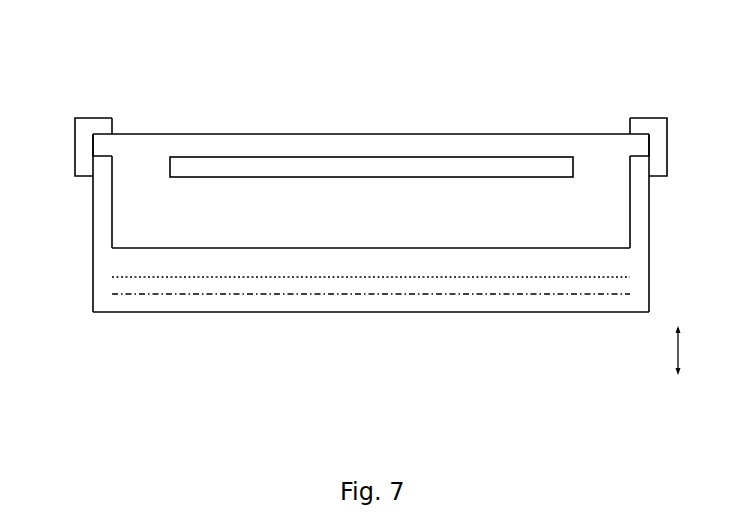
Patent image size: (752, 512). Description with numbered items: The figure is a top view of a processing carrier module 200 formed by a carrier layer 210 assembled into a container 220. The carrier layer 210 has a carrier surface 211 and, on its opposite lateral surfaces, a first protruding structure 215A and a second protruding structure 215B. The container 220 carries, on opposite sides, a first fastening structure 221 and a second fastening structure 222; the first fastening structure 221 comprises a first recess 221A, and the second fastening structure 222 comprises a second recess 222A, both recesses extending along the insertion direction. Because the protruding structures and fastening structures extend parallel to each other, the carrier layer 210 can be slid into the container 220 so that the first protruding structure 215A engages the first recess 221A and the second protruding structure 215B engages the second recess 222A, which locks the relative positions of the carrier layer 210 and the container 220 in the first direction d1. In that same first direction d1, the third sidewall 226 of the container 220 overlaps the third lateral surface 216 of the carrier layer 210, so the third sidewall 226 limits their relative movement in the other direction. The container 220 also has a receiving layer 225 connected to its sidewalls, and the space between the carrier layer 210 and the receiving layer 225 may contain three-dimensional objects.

The processing carrier module 200 is at (105, 33).
The carrier layer 210 is at (369, 88).
The carrier surface 211 is at (177, 287).
The first protruding structure 215A is at (642, 143).
The second protruding structure 215B is at (100, 143).
The third lateral surface 216 is at (617, 221).
The container 220 is at (364, 320).
The first fastening structure 221 is at (658, 117).
The first recess 221A is at (649, 149).
The second fastening structure 222 is at (80, 116).
The second recess 222A is at (93, 149).
The receiving layer 225 is at (467, 319).
The third sidewall 226 is at (617, 262).
The first direction d1 is at (687, 350).